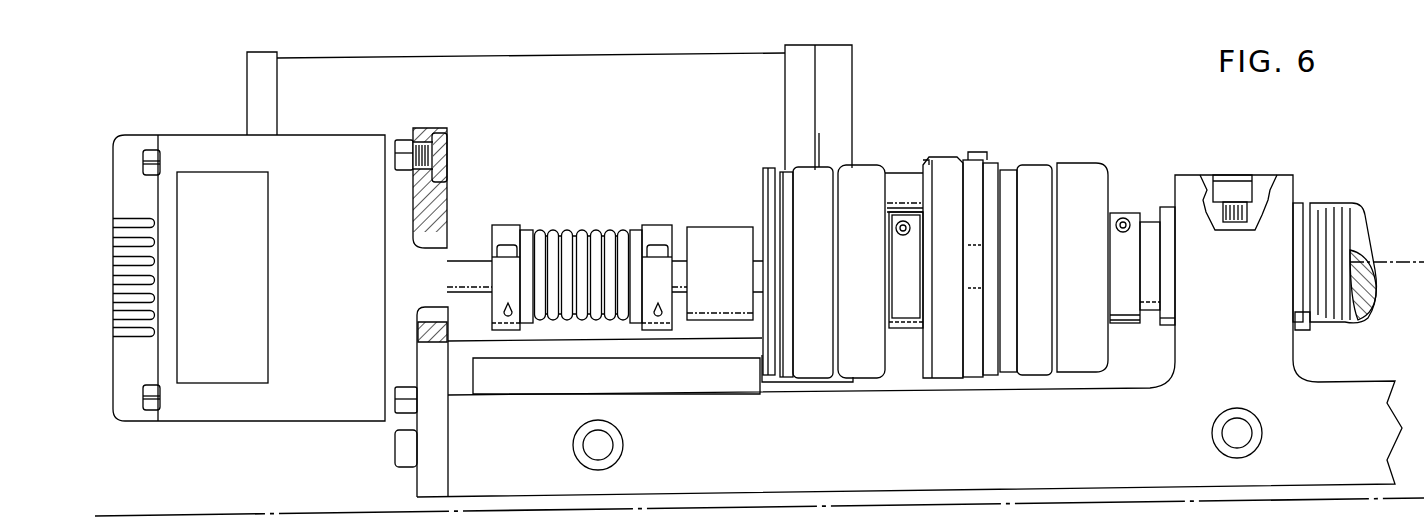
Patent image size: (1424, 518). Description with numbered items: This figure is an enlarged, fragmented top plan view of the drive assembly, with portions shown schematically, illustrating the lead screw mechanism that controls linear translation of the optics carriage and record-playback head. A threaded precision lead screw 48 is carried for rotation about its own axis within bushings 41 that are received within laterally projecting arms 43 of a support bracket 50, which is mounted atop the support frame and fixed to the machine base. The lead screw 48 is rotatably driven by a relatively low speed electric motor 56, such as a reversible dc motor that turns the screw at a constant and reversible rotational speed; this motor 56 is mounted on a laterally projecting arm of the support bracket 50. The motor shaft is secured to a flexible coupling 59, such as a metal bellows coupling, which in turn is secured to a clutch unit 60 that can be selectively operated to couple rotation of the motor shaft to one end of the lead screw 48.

The electric motor 56 is at (223, 378).
The flexible coupling 59 is at (597, 192).
The support bracket 50 is at (862, 98).
The clutch unit 60 is at (977, 102).
The bushings 41 is at (1170, 323).
The laterally projecting arms 43 is at (1313, 175).
The lead screw 48 is at (1337, 340).